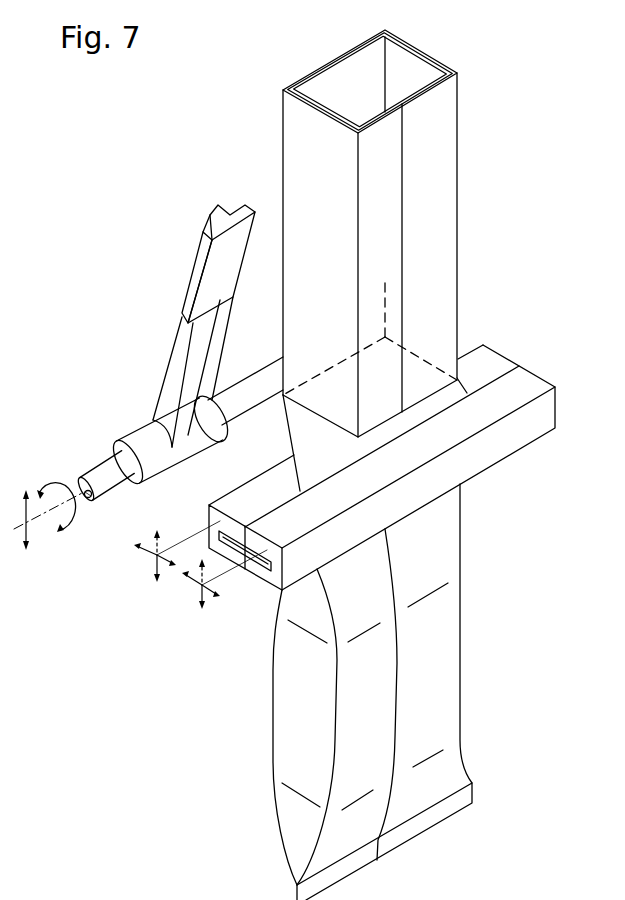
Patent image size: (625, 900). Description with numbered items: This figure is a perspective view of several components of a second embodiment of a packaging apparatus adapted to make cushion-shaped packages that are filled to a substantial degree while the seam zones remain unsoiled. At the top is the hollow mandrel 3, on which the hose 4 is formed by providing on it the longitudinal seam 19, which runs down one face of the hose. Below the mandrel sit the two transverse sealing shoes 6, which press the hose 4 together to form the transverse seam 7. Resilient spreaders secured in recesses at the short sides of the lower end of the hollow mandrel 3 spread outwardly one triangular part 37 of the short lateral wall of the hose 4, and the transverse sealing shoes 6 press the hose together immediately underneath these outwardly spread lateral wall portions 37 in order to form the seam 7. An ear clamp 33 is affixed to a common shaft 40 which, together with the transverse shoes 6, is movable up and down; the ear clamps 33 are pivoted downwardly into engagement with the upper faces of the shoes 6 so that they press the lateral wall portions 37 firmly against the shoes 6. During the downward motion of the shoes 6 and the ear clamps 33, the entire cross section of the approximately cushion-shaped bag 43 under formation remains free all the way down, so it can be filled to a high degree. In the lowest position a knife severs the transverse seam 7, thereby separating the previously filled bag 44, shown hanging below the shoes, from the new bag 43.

The hollow mandrel 3 is at (331, 64).
The hose 4 is at (459, 193).
The cushion-shaped bag under formation 43 is at (282, 149).
The longitudinal seam 19 is at (404, 265).
The transverse sealing shoes 6 is at (490, 362).
The triangular part of the short lateral wall 37 is at (308, 440).
The common shaft 40 is at (108, 473).
The ear clamps 33 is at (202, 260).
The previously filled bag 44 is at (273, 741).
The transverse seam 7 is at (402, 840).